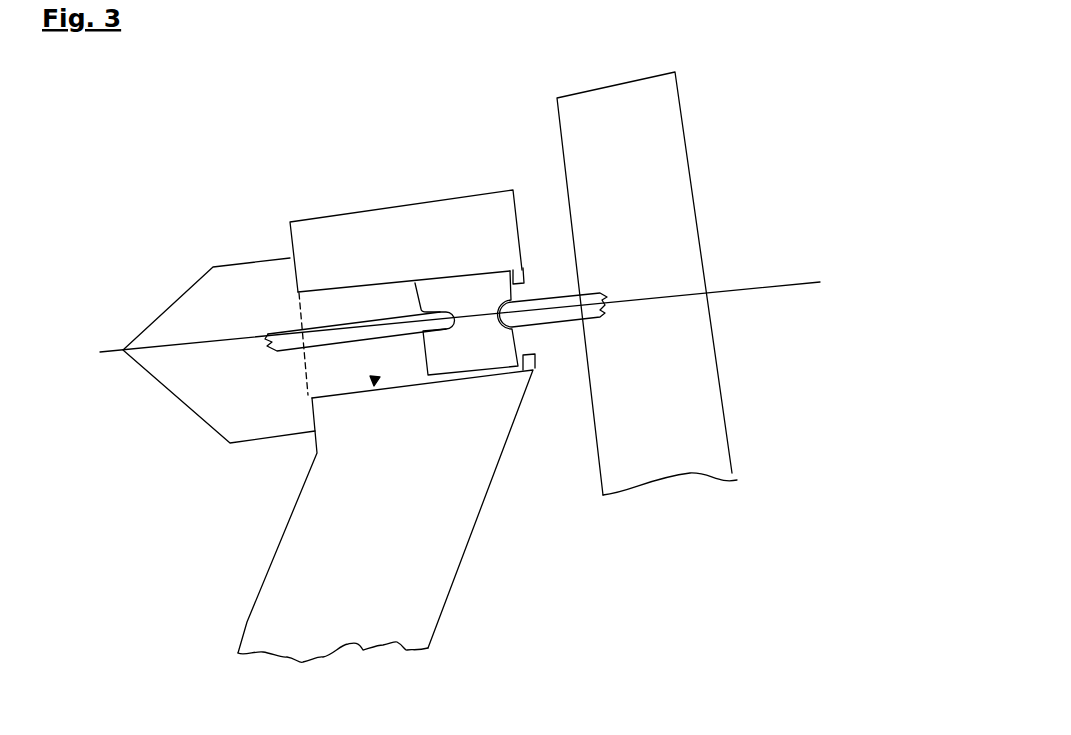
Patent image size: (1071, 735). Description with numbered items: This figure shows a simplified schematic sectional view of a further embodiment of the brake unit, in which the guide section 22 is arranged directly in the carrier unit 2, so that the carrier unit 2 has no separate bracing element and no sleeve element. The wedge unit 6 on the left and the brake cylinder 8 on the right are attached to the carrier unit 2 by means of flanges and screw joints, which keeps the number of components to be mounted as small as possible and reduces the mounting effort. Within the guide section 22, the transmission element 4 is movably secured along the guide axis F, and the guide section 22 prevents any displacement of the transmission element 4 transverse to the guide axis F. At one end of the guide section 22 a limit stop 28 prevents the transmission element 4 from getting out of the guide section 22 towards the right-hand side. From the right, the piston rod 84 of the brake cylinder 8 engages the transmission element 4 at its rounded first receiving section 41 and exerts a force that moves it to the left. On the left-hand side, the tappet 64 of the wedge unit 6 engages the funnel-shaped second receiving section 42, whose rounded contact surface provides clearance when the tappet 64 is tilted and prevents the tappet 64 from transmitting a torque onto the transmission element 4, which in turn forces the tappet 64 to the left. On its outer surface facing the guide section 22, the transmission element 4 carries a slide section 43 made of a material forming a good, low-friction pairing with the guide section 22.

The carrier unit 2 is at (440, 587).
The transmission element 4 is at (470, 293).
The wedge unit 6 is at (220, 397).
The brake cylinder 8 is at (667, 137).
The guide section 22 is at (376, 378).
The limit stop 28 is at (520, 275).
The first receiving section 41 is at (516, 331).
The second receiving section 42 is at (423, 283).
The slide section 43 is at (475, 374).
The tappet 64 is at (378, 333).
The piston rod 84 is at (557, 302).
The guide axis F is at (720, 290).